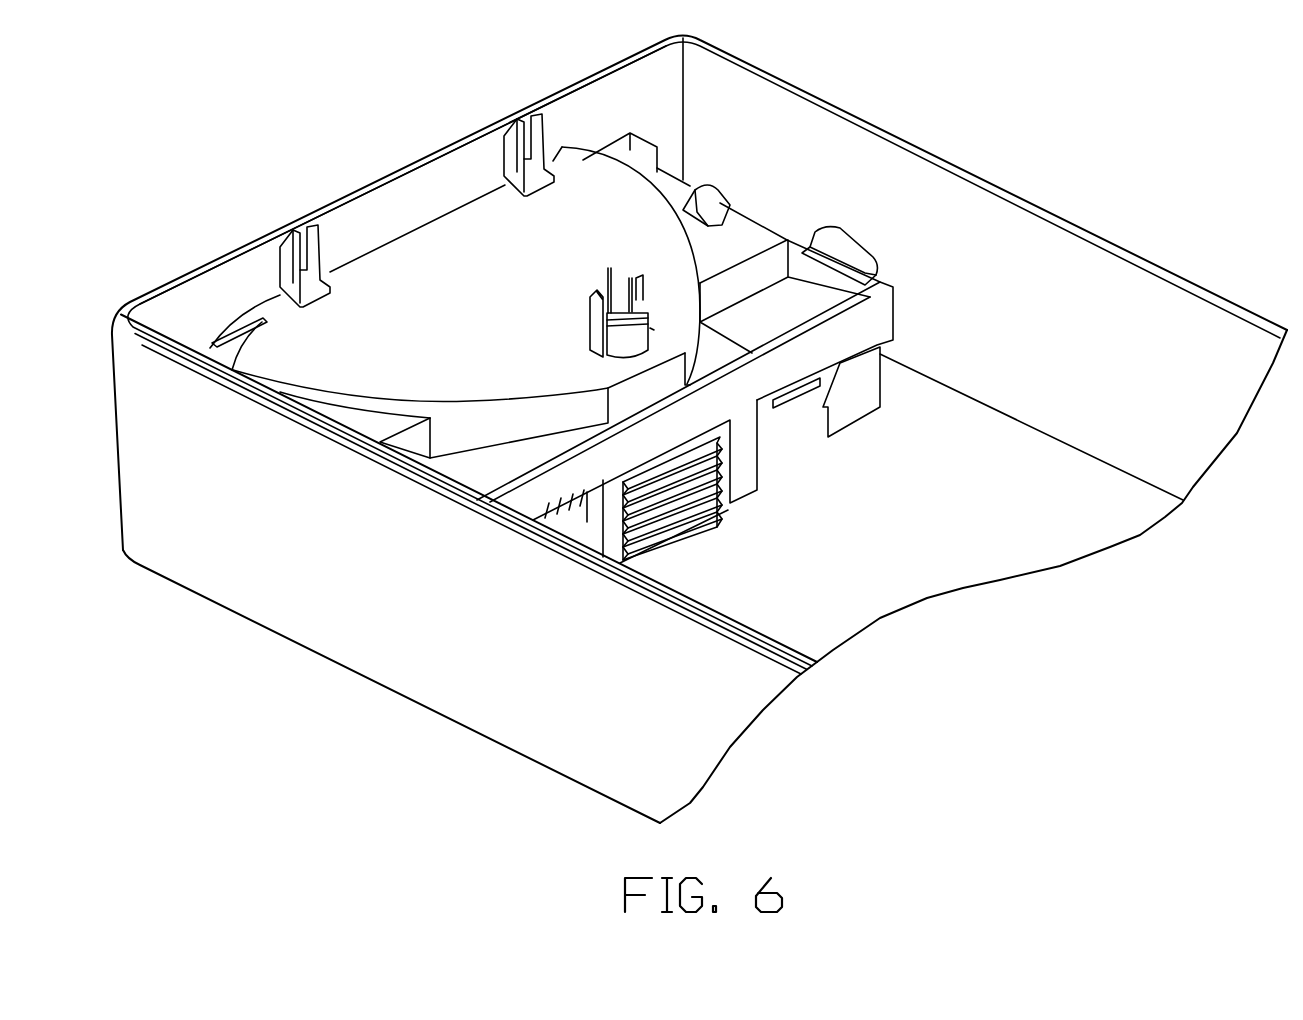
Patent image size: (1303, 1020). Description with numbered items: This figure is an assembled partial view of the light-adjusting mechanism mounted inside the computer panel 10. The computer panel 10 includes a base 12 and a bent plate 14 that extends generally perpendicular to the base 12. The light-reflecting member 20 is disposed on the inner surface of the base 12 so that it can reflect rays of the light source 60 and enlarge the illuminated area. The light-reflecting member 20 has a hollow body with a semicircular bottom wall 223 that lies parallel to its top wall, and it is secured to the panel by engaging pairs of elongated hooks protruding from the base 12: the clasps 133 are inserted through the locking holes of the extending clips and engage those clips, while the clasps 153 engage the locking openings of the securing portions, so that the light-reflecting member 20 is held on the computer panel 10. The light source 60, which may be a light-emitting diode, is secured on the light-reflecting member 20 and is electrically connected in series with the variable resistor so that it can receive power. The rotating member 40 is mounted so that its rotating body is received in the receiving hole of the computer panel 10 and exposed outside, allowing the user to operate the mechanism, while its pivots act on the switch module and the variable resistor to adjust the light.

The computer panel 10 is at (325, 600).
The base 12 is at (1007, 530).
The bent plate 14 is at (202, 300).
The light-reflecting member 20 is at (752, 235).
The rotating member 40 is at (677, 515).
The light source 60 is at (620, 303).
The clasp 133 is at (700, 200).
The clasp 153 is at (852, 252).
The bottom wall 223 is at (412, 260).